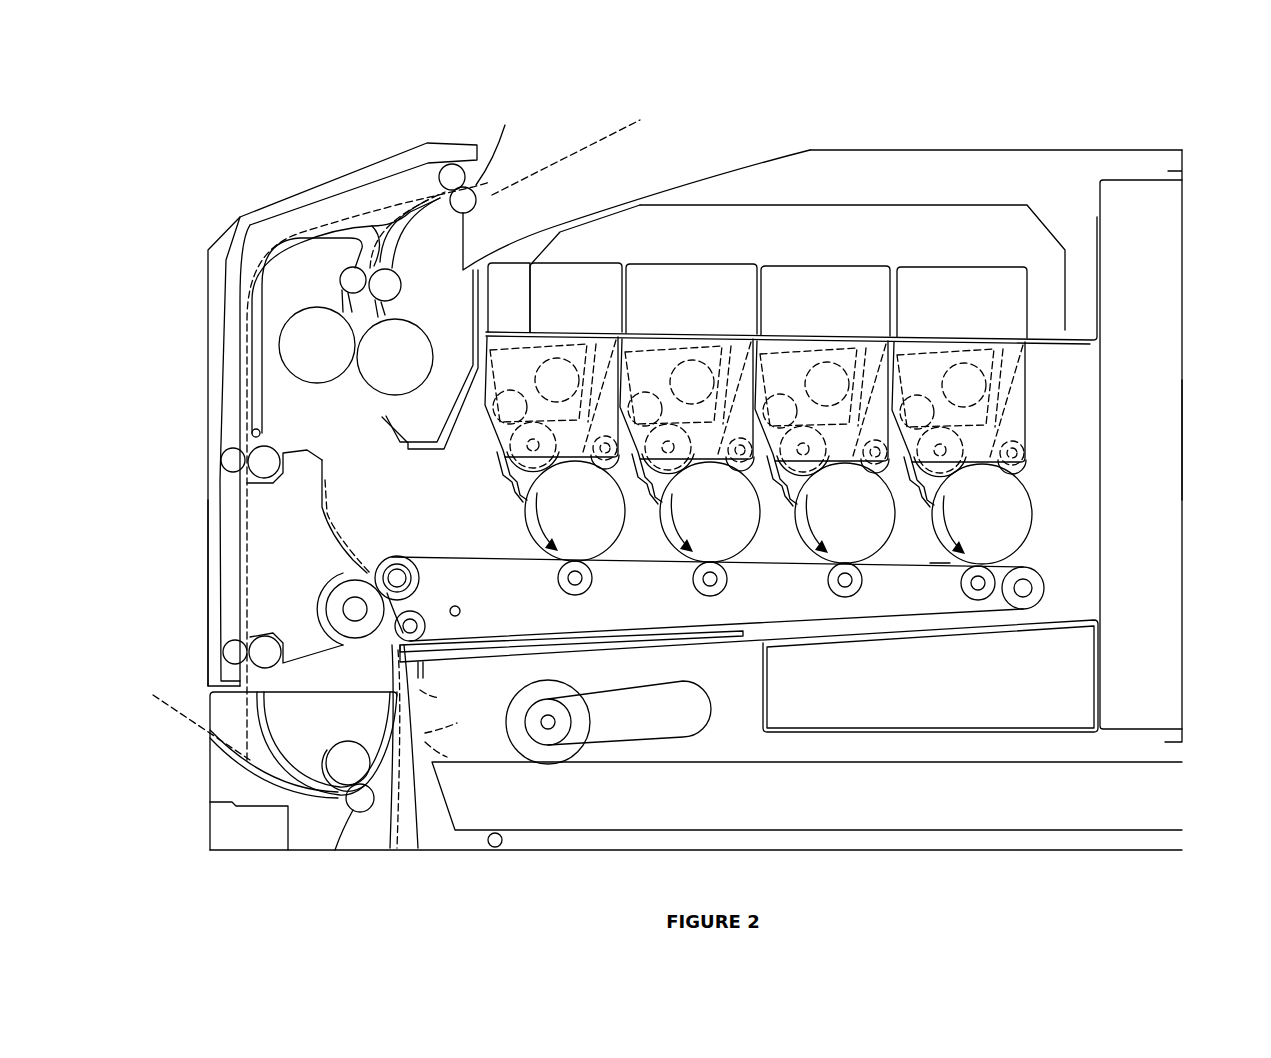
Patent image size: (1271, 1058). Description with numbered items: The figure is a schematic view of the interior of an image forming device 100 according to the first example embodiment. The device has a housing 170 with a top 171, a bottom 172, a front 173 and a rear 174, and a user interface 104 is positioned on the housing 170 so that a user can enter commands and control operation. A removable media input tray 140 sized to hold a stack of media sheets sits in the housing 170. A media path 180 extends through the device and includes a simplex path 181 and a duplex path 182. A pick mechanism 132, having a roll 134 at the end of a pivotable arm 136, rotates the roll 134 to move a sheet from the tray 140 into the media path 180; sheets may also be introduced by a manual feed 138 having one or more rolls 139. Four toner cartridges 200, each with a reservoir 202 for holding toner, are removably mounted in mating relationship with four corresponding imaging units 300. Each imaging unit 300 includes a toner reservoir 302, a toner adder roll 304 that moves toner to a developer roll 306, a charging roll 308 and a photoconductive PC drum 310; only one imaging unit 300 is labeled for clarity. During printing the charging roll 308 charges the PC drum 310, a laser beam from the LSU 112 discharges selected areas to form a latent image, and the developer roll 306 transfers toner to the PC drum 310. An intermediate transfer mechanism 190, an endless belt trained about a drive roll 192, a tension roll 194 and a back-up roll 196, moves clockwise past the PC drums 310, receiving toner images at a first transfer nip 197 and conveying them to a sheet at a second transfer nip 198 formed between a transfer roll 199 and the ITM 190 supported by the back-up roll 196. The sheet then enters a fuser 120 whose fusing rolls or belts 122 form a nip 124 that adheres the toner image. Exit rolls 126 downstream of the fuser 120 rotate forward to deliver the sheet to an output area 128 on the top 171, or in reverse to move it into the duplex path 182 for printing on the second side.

The image forming device 100 is at (248, 152).
The user interface 104 is at (220, 235).
The LSU 112 is at (906, 224).
The fuser 120 is at (318, 392).
The fusing rolls or belts 122 is at (356, 331).
The nip 124 is at (360, 408).
The exit rolls 126 is at (462, 163).
The output area 128 is at (636, 200).
The pick mechanism 132 is at (670, 740).
The roll 134 is at (556, 688).
The pivotable arm 136 is at (647, 683).
The manual feed 138 is at (220, 748).
The rolls 139 is at (342, 742).
The media input tray 140 is at (807, 804).
The housing 170 is at (1140, 148).
The top 171 is at (863, 148).
The bottom 172 is at (980, 850).
The front 173 is at (205, 497).
The rear 174 is at (1183, 442).
The media path 180 is at (432, 738).
The simplex path 181 is at (322, 447).
The duplex path 182 is at (240, 373).
The intermediate transfer mechanism 190 is at (893, 621).
The drive roll 192 is at (1045, 590).
The tension roll 194 is at (427, 608).
The back-up roll 196 is at (418, 559).
The first transfer nip 197 is at (935, 556).
The second transfer nip 198 is at (371, 556).
The transfer roll 199 is at (318, 593).
The toner cartridge 200 is at (607, 263).
The reservoir 202 is at (777, 294).
The imaging unit 300 is at (989, 395).
The toner reservoir 302 is at (945, 368).
The toner adder roll 304 is at (971, 359).
The developer roll 306 is at (999, 426).
The charging roll 308 is at (1042, 444).
The PC drum 310 is at (1034, 513).